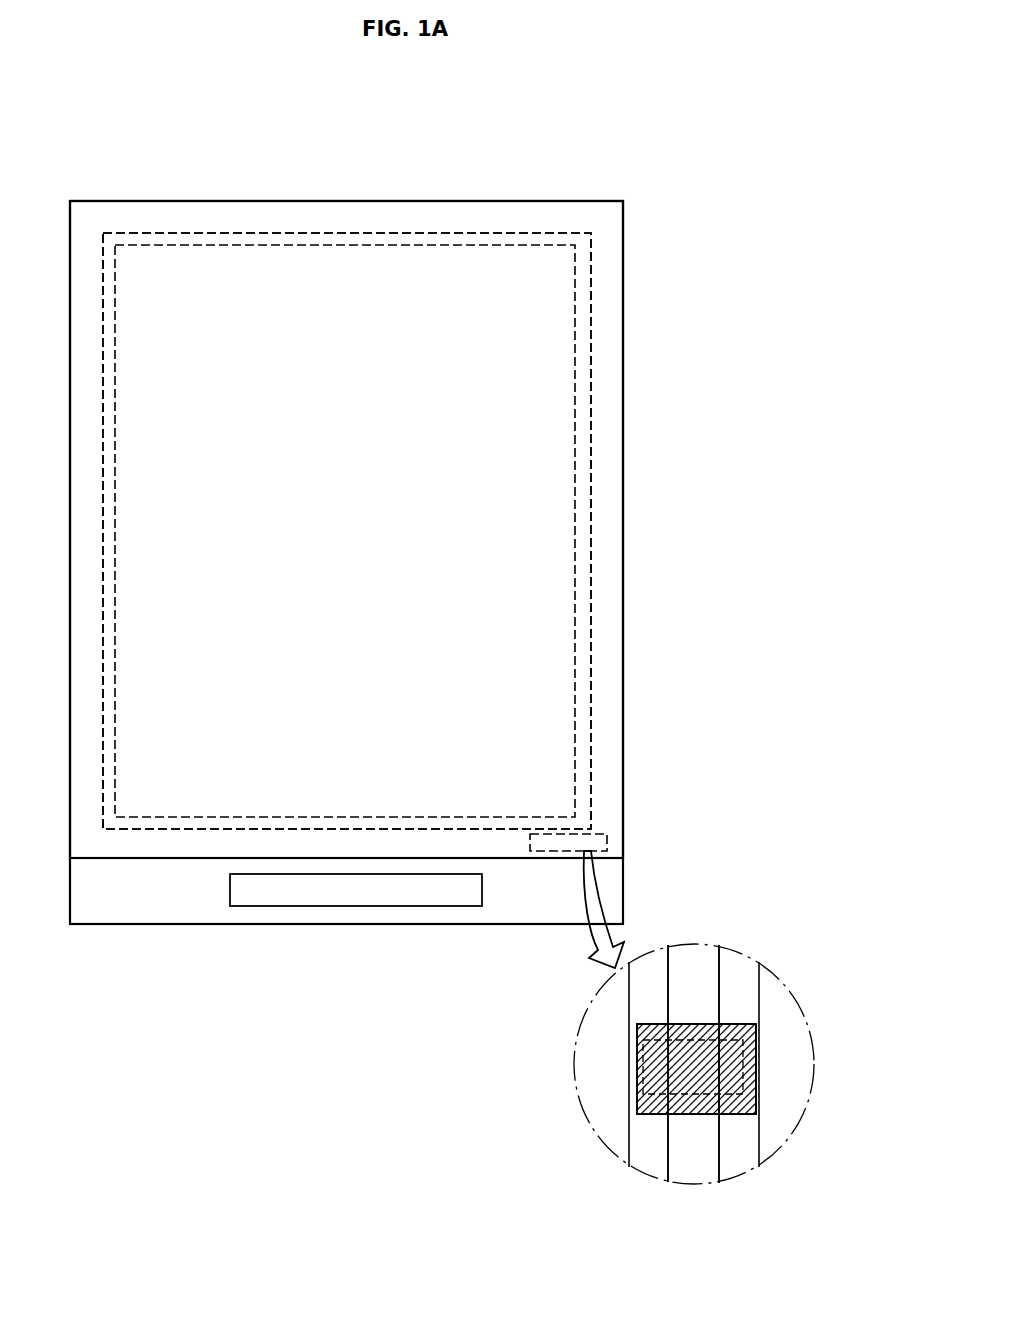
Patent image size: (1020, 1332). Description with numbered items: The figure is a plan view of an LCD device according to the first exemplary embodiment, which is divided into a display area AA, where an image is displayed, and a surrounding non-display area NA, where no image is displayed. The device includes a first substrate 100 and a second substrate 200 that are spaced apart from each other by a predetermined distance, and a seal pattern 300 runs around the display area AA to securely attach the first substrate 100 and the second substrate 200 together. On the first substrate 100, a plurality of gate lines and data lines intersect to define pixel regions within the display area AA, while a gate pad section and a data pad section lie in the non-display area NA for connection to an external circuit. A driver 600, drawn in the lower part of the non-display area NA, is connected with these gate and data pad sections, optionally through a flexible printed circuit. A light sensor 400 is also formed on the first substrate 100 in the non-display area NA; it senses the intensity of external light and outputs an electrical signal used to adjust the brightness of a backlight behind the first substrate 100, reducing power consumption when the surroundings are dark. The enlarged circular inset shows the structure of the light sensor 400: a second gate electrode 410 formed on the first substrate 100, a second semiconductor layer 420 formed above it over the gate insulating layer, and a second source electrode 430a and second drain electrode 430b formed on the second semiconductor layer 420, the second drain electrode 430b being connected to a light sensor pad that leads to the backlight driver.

The first substrate 100 is at (616, 881).
The second substrate 200 is at (613, 774).
The seal pattern 300 is at (578, 665).
The light sensor 400 is at (604, 843).
The second gate electrode 410 is at (745, 1068).
The second semiconductor layer 420 is at (695, 1108).
The second source electrode 430a is at (645, 1158).
The second drain electrode 430b is at (745, 1148).
The driver 600 is at (310, 897).
The display area AA is at (352, 272).
The non-display area NA is at (484, 220).